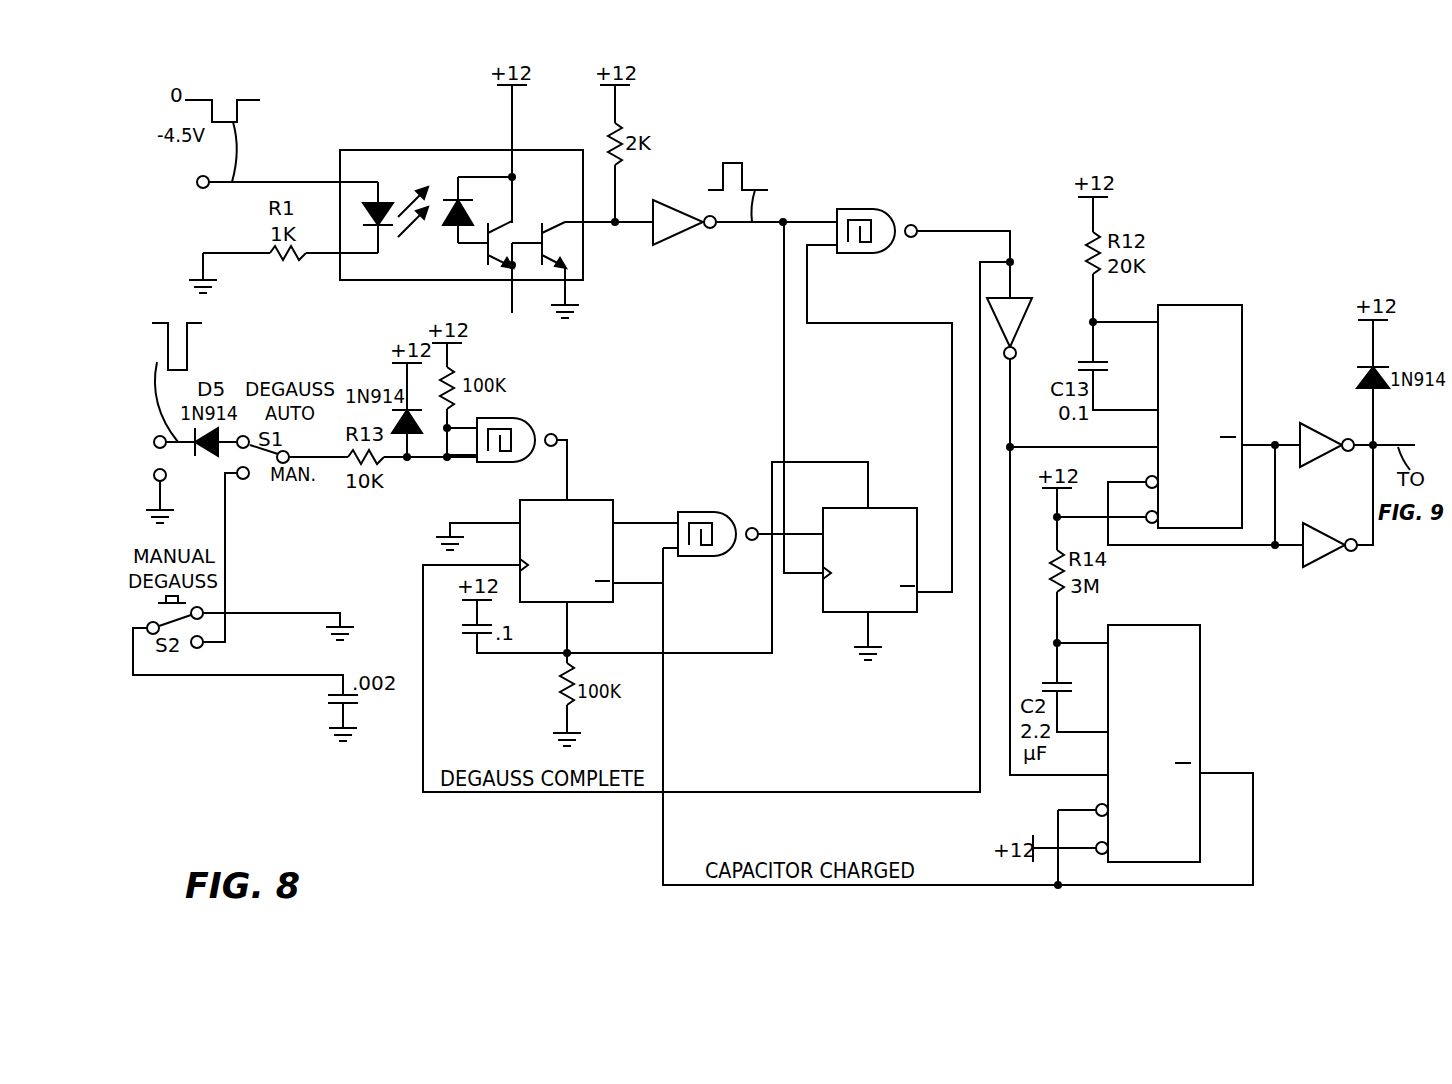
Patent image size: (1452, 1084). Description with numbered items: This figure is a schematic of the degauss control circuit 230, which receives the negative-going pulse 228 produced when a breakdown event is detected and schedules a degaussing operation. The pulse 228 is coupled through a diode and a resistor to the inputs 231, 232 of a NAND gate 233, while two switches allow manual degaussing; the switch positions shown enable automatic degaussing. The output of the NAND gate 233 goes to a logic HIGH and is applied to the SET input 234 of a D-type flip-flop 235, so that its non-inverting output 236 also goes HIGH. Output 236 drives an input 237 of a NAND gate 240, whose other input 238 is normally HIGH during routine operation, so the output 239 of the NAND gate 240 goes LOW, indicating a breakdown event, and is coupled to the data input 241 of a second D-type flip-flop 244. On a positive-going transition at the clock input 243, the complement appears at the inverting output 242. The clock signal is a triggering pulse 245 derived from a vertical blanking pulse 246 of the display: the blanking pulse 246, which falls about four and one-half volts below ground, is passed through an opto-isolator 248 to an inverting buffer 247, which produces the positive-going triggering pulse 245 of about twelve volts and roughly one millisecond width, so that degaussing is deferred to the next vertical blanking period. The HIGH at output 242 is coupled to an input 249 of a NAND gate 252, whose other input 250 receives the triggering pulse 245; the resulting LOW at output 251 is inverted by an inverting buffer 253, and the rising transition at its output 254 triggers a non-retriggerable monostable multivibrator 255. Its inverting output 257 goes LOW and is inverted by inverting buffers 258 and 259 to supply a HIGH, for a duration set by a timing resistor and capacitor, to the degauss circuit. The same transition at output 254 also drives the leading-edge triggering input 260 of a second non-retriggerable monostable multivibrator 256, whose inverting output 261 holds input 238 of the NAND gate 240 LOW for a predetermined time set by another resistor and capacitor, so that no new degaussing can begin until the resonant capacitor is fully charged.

The negative-going pulse 228 is at (189, 357).
The degauss control circuit 230 is at (992, 82).
The input of NAND gate 233 231 is at (472, 417).
The input of NAND gate 233 232 is at (468, 463).
The NAND gate 233 is at (545, 420).
The SET input 234 is at (567, 498).
The D-type flip-flop 235 is at (605, 500).
The non-inverting output 236 is at (617, 525).
The input of NAND gate 240 237 is at (682, 513).
The input of NAND gate 240 238 is at (674, 557).
The output of NAND gate 240 239 is at (757, 542).
The NAND gate 240 is at (733, 514).
The data input 241 is at (823, 522).
The inverting output 242 is at (918, 600).
The clock input 243 is at (820, 576).
The D-type flip-flop 244 is at (887, 508).
The triggering pulse 245 is at (745, 171).
The vertical blanking pulse 246 is at (240, 111).
The inverting buffer 247 is at (667, 240).
The opto-isolator 248 is at (398, 280).
The input of NAND gate 252 249 is at (838, 255).
The input of NAND gate 252 250 is at (838, 211).
The output of NAND gate 252 251 is at (916, 238).
The NAND gate 252 is at (890, 210).
The inverting buffer 253 is at (1048, 296).
The output of buffer 253 254 is at (1048, 352).
The monostable multivibrator 255 is at (1195, 305).
The monostable multivibrator 256 is at (1163, 625).
The inverting output 257 is at (1258, 442).
The inverting buffer 258 is at (1310, 426).
The inverting buffer 259 is at (1323, 532).
The leading-edge triggering input 260 is at (1103, 775).
The inverting output 261 is at (1203, 770).